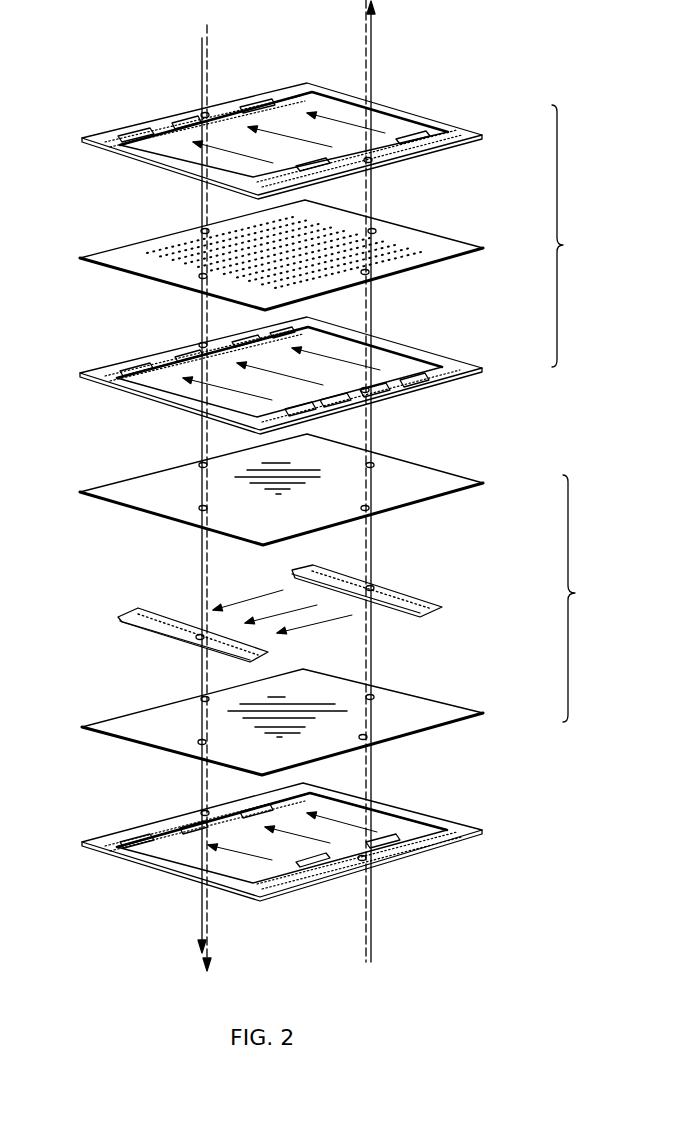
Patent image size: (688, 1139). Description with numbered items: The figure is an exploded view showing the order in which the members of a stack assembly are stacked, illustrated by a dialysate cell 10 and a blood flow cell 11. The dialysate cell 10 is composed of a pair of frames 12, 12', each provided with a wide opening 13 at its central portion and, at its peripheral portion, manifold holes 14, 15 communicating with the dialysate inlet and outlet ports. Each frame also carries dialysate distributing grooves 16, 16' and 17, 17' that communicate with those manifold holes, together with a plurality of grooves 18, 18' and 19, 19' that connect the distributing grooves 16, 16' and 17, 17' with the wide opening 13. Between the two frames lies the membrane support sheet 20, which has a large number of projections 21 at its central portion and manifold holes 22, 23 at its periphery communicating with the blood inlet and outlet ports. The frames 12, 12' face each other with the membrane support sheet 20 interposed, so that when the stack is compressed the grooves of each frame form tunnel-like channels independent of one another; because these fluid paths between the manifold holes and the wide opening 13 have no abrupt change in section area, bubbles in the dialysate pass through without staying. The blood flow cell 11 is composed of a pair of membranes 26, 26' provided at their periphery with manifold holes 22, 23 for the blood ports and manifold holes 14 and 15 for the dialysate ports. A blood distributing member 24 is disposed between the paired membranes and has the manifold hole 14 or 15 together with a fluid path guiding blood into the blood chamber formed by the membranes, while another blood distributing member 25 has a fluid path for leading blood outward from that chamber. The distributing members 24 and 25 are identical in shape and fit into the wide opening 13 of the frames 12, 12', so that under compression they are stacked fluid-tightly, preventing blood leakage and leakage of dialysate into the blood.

The dialysate cell 10 is at (575, 236).
The blood flow cell 11 is at (588, 598).
The frame 12 is at (315, 492).
The frame 12' is at (315, 375).
The wide opening 13 is at (333, 112).
The manifold hole 14 is at (203, 112).
The manifold hole 15 is at (370, 161).
The dialysate distributing groove 16 is at (205, 87).
The dialysate distributing groove 16' is at (204, 350).
The dialysate distributing groove 17 is at (363, 158).
The dialysate distributing groove 17' is at (367, 396).
The connecting groove 18 is at (282, 70).
The connecting groove 18' is at (175, 347).
The connecting groove 19 is at (445, 115).
The connecting groove 19' is at (463, 338).
The membrane support sheet 20 is at (483, 248).
The projections 21 is at (403, 255).
The manifold hole 22 is at (374, 229).
The manifold hole 23 is at (200, 277).
The blood distributing member 24 is at (442, 608).
The blood distributing member 25 is at (118, 617).
The membrane 26 is at (312, 489).
The membrane 26' is at (316, 722).